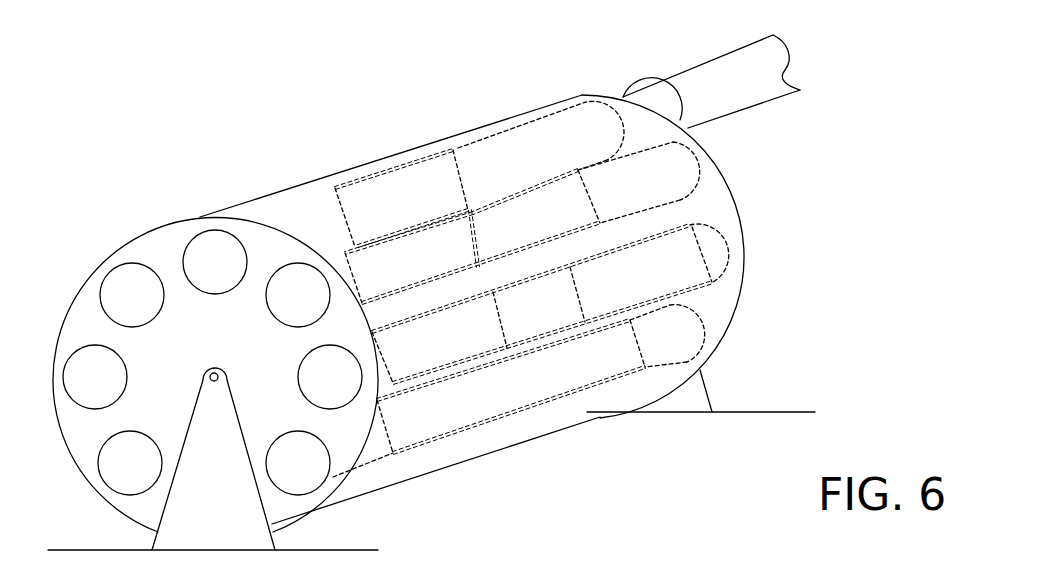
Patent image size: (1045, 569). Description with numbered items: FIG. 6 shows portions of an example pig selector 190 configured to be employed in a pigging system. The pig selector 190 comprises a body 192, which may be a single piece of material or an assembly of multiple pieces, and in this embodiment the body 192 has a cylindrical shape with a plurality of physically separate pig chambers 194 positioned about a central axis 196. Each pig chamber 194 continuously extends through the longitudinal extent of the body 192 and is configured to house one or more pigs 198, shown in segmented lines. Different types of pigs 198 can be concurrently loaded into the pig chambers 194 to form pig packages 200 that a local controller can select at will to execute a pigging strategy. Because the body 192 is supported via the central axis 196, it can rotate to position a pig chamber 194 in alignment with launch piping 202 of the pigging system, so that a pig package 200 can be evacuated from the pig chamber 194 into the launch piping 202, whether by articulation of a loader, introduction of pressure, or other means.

The pig selector 190 is at (138, 40).
The body 192 is at (200, 215).
The pig chambers 194 is at (152, 316).
The central axis 196 is at (228, 377).
The pigs 198 is at (418, 212).
The pig packages 200 is at (461, 145).
The launch piping 202 is at (792, 100).